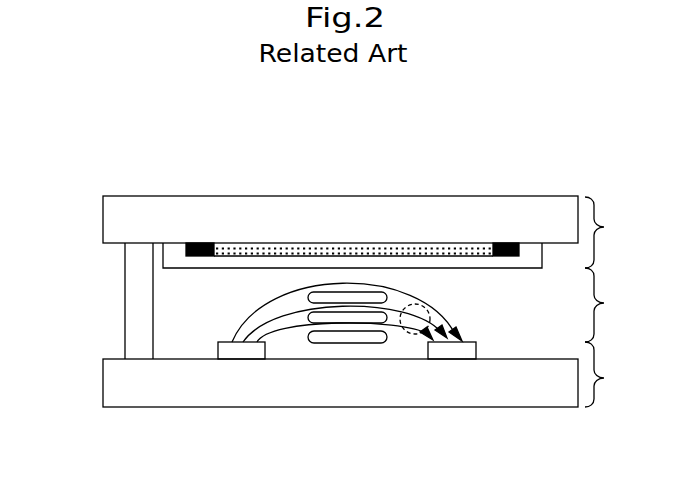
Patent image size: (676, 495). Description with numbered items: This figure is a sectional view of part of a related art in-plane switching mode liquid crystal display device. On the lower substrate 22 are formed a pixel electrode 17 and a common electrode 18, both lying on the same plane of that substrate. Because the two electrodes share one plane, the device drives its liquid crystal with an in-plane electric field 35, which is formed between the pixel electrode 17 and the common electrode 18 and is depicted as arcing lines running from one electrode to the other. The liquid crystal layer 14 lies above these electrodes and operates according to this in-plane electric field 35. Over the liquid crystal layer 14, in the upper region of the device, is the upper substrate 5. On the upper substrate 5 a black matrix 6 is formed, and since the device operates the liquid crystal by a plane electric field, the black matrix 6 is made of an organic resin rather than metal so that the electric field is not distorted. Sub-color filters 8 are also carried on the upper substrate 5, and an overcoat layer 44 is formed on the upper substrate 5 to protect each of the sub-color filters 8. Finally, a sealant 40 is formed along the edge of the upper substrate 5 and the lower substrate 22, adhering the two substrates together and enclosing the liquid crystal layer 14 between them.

The upper substrate 5 is at (362, 232).
The black matrix 6 is at (198, 243).
The sub-color filters 8 is at (338, 250).
The overcoat layer 44 is at (170, 256).
The sealant 40 is at (135, 302).
The liquid crystal layer 14 is at (343, 340).
The pixel electrode 17 is at (240, 350).
The common electrode 18 is at (452, 350).
The in-plane electric field 35 is at (407, 334).
The lower substrate 22 is at (368, 374).